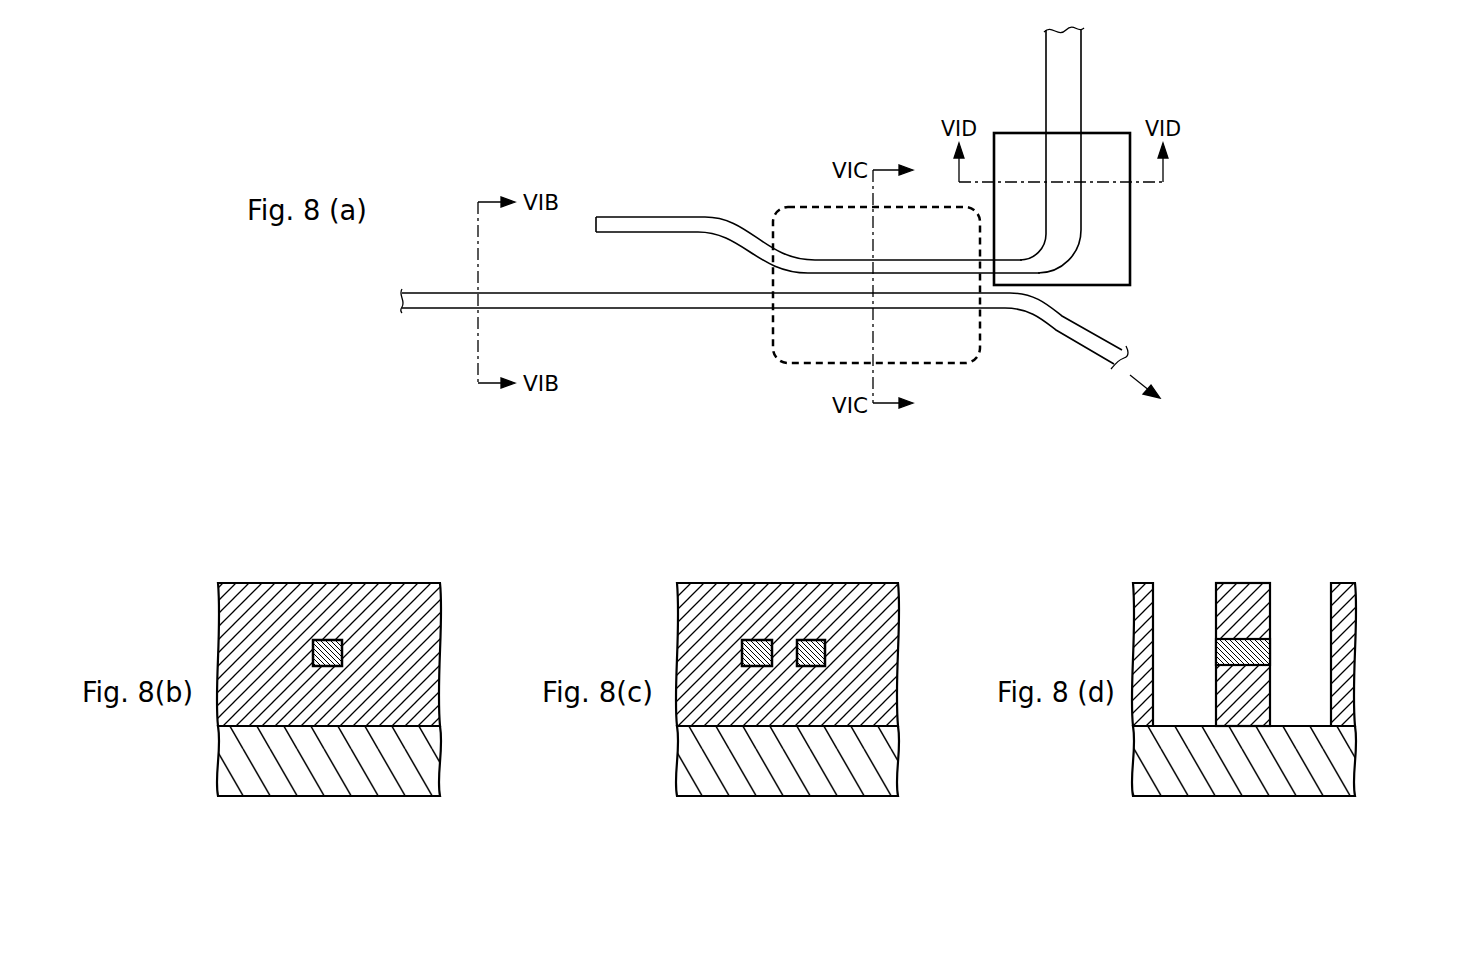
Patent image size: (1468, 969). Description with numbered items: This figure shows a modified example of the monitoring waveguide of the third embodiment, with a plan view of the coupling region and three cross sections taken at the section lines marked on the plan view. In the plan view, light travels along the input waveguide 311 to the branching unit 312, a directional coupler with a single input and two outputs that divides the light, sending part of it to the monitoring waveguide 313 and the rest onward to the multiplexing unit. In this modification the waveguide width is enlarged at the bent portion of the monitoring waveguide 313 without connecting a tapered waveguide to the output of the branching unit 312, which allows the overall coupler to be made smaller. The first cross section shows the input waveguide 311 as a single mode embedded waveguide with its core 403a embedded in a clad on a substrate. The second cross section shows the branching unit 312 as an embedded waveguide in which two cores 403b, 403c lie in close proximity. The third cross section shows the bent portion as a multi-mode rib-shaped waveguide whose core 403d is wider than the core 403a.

The input waveguide 311 is at (640, 311).
The branching unit 312 is at (793, 205).
The monitoring waveguide 313 is at (1084, 34).
The core 403a is at (325, 640).
The core 403b is at (752, 640).
The core 403c is at (812, 640).
The core 403d is at (1265, 652).